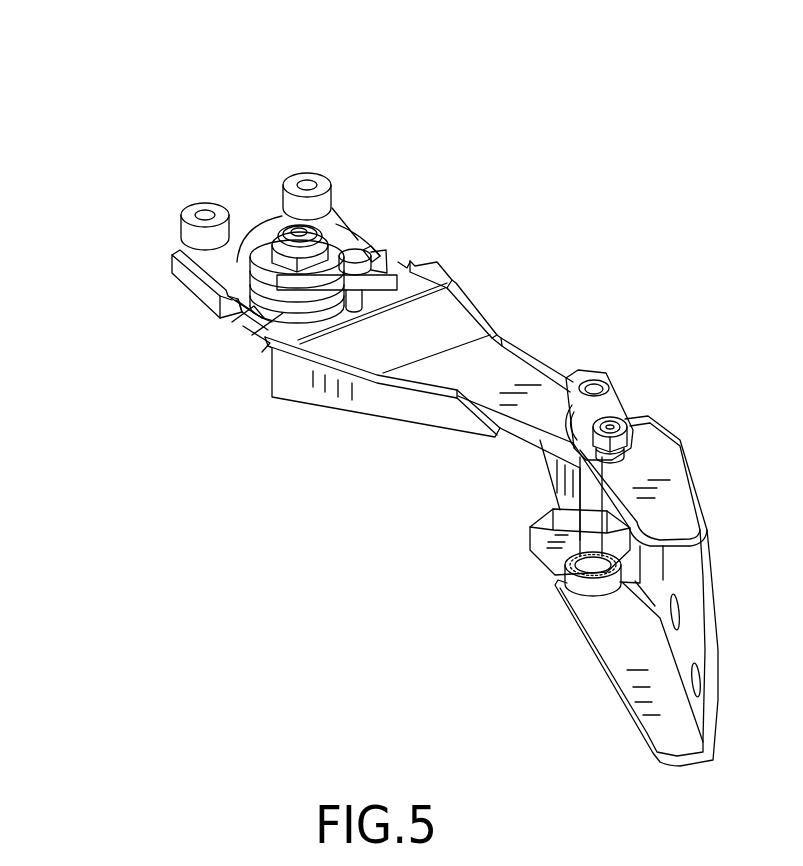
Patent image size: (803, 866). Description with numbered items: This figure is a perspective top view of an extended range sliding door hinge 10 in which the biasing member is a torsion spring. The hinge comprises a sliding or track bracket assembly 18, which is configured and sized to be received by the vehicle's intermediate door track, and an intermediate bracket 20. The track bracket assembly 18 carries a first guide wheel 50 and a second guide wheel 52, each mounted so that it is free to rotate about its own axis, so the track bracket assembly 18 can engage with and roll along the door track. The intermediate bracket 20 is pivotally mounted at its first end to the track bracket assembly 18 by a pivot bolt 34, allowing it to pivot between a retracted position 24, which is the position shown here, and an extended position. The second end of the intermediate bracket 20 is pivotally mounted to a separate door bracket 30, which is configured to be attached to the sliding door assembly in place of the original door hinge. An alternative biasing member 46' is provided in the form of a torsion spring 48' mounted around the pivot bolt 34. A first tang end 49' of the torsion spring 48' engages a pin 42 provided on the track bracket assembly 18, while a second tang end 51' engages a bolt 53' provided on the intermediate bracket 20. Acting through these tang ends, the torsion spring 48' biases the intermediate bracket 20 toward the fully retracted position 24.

The extended range sliding door hinge 10 is at (170, 68).
The track bracket assembly 18 is at (152, 266).
The intermediate bracket 20 is at (529, 341).
The retracted position 24 is at (330, 452).
The door bracket 30 is at (592, 693).
The pivot bolt 34 is at (277, 216).
The pin 42 is at (384, 250).
The biasing member 46' is at (224, 336).
The torsion spring 48' is at (251, 358).
The first tang end 49' is at (370, 252).
The first guide wheel 50 is at (188, 204).
The second tang end 51' is at (381, 321).
The second guide wheel 52 is at (299, 168).
The bolt 53' is at (379, 197).